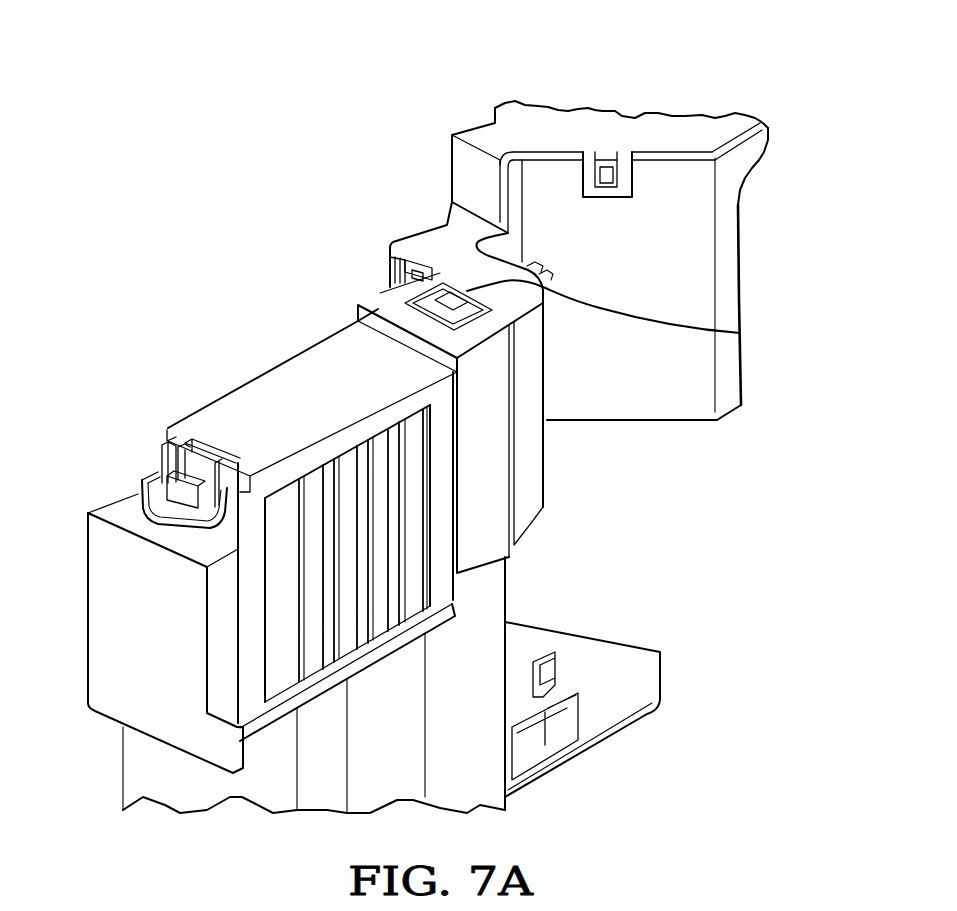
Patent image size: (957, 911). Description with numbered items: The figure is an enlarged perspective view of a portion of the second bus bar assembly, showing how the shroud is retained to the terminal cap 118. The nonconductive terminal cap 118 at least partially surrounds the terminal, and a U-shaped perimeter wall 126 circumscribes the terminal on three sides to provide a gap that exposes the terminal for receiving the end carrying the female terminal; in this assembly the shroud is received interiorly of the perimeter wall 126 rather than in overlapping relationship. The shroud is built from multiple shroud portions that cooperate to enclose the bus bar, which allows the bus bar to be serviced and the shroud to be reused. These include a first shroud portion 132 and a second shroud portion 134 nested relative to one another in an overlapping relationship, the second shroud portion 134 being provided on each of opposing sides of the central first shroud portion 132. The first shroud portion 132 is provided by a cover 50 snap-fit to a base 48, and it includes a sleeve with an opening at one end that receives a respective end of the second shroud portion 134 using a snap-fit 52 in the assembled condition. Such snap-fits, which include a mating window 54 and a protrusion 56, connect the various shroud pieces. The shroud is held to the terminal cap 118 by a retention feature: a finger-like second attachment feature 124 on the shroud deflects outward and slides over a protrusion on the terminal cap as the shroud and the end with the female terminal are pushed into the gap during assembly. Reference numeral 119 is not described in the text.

The base 48 is at (599, 241).
The cover 50 is at (598, 122).
The snap-fit 52 is at (642, 164).
The mating window 54 is at (445, 293).
The protrusion 56 is at (740, 333).
The terminal cap 118 is at (447, 653).
The vent hole 119 is at (520, 673).
The second attachment feature 124 is at (147, 470).
The perimeter wall 126 is at (350, 513).
The first shroud portion 132 is at (593, 241).
The second shroud portion 134 is at (287, 431).